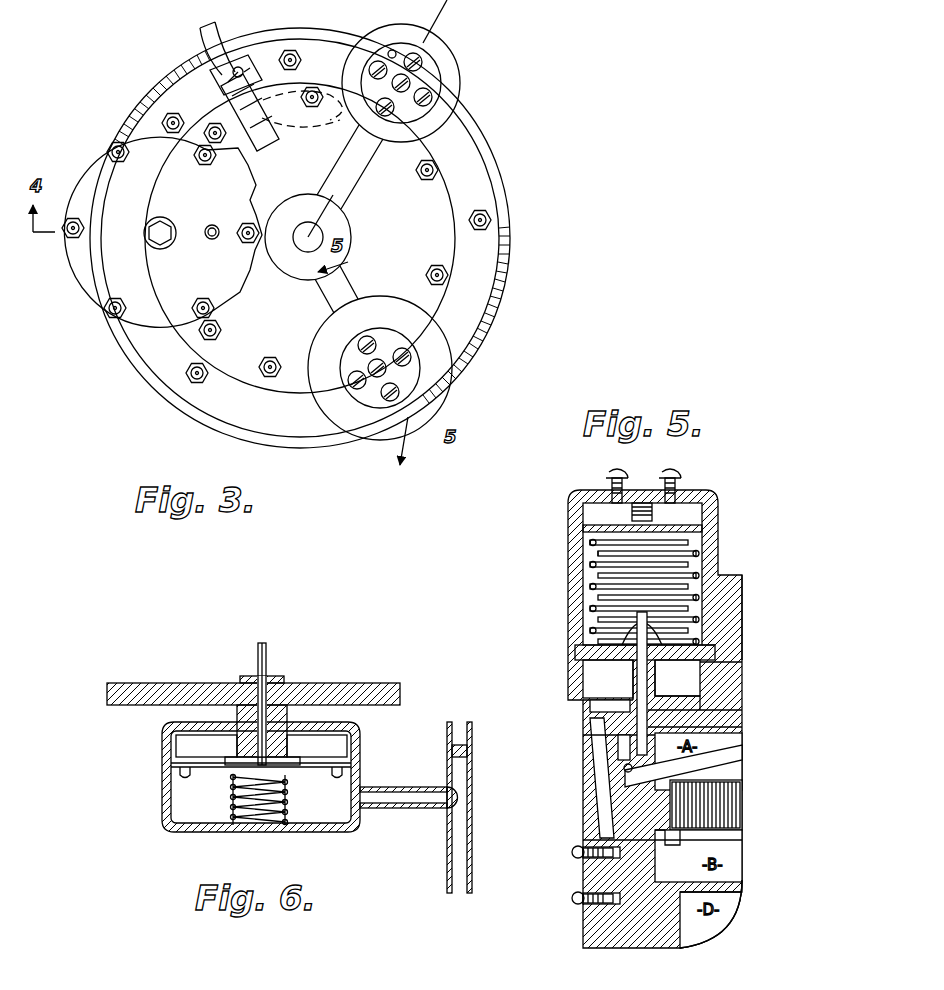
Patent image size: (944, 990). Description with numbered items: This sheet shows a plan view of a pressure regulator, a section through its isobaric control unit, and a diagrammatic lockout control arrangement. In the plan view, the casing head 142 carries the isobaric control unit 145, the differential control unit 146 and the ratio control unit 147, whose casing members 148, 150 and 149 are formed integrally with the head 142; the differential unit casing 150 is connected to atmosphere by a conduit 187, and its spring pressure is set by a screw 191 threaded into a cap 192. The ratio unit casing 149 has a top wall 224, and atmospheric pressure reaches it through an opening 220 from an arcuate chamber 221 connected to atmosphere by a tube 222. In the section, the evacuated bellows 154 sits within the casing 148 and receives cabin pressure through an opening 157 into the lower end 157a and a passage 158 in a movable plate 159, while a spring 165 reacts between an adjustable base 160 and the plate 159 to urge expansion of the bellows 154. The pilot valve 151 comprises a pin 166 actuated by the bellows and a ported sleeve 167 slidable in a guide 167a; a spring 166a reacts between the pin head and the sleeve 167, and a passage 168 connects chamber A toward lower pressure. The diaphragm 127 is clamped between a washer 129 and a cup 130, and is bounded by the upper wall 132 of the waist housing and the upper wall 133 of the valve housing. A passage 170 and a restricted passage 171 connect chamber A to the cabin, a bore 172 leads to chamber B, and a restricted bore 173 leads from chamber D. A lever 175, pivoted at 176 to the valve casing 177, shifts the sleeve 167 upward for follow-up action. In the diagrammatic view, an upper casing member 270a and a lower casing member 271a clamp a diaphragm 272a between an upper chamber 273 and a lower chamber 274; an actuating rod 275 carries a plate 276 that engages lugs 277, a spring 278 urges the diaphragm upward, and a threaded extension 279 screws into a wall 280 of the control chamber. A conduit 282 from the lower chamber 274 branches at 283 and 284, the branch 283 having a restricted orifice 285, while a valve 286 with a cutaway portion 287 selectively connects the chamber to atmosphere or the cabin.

In FIG. 3, the casing head 142 is at (440, 193).
In FIG. 5, the casing head 142 is at (742, 580).
In FIG. 3, the isobaric control means or unit 145 is at (452, 404).
In FIG. 5, the isobaric control means or unit 145 is at (568, 575).
In FIG. 3, the differential control means or unit 146 is at (92, 162).
In FIG. 3, the ratio control means or unit 147 is at (463, 73).
In FIG. 3, the casing member 148 is at (437, 388).
In FIG. 5, the casing member 148 is at (575, 610).
In FIG. 3, the casing member 149 is at (445, 57).
In FIG. 3, the casing member 150 is at (82, 283).
In FIG. 5, the pilot valve 151 is at (620, 762).
In FIG. 5, the pressure responsive means 154 is at (697, 541).
In FIG. 5, the opening 157 is at (590, 688).
In FIG. 5, the lower end of casing 157a is at (590, 672).
In FIG. 5, the passage 158 is at (580, 655).
In FIG. 5, the movable plate 159 is at (715, 655).
In FIG. 5, the adjustable base 160 is at (695, 522).
In FIG. 5, the spring 165 is at (590, 543).
In FIG. 5, the pin 166 is at (650, 680).
In FIG. 5, the spring 166a is at (592, 706).
In FIG. 5, the ported sleeve 167 is at (600, 725).
In FIG. 5, the guide 167a is at (585, 718).
In FIG. 5, the passage 168 is at (735, 695).
In FIG. 5, the passage 170 is at (604, 800).
In FIG. 5, the restricted passage 171 is at (612, 812).
In FIG. 5, the bore 172 is at (598, 860).
In FIG. 5, the restricted bore 173 is at (598, 905).
In FIG. 5, the lever 175 is at (720, 756).
In FIG. 5, the pivot 176 is at (618, 776).
In FIG. 5, the valve casing 177 is at (618, 745).
In FIG. 5, the diaphragm 127 is at (695, 832).
In FIG. 5, the washer 129 is at (742, 842).
In FIG. 5, the cup 130 is at (735, 806).
In FIG. 5, the upper wall 132 is at (742, 716).
In FIG. 5, the upper wall 133 is at (735, 898).
In FIG. 3, the conduit 187 is at (212, 224).
In FIG. 3, the screw 191 is at (158, 226).
In FIG. 3, the cap 192 is at (102, 295).
In FIG. 3, the opening 220 is at (303, 123).
In FIG. 3, the arcuate chamber 221 is at (292, 90).
In FIG. 3, the tube 222 is at (212, 38).
In FIG. 3, the top wall 224 is at (388, 52).
In FIG. 6, the upper casing member 270a is at (166, 746).
In FIG. 6, the lower casing member 271a is at (165, 818).
In FIG. 6, the diaphragm 272a is at (308, 777).
In FIG. 6, the upper chamber 273 is at (358, 748).
In FIG. 6, the lower chamber 274 is at (318, 824).
In FIG. 6, the actuating rod 275 is at (258, 662).
In FIG. 6, the plate 276 is at (235, 770).
In FIG. 6, the lugs 277 is at (237, 746).
In FIG. 6, the spring 278 is at (235, 822).
In FIG. 6, the externally threaded extension 279 is at (284, 682).
In FIG. 6, the wall 280 is at (380, 676).
In FIG. 6, the conduit 282 is at (395, 787).
In FIG. 6, the branch 283 is at (472, 770).
In FIG. 6, the branch 284 is at (472, 840).
In FIG. 6, the restricted orifice 285 is at (470, 752).
In FIG. 6, the valve 286 is at (472, 805).
In FIG. 6, the cutaway portion 287 is at (447, 795).